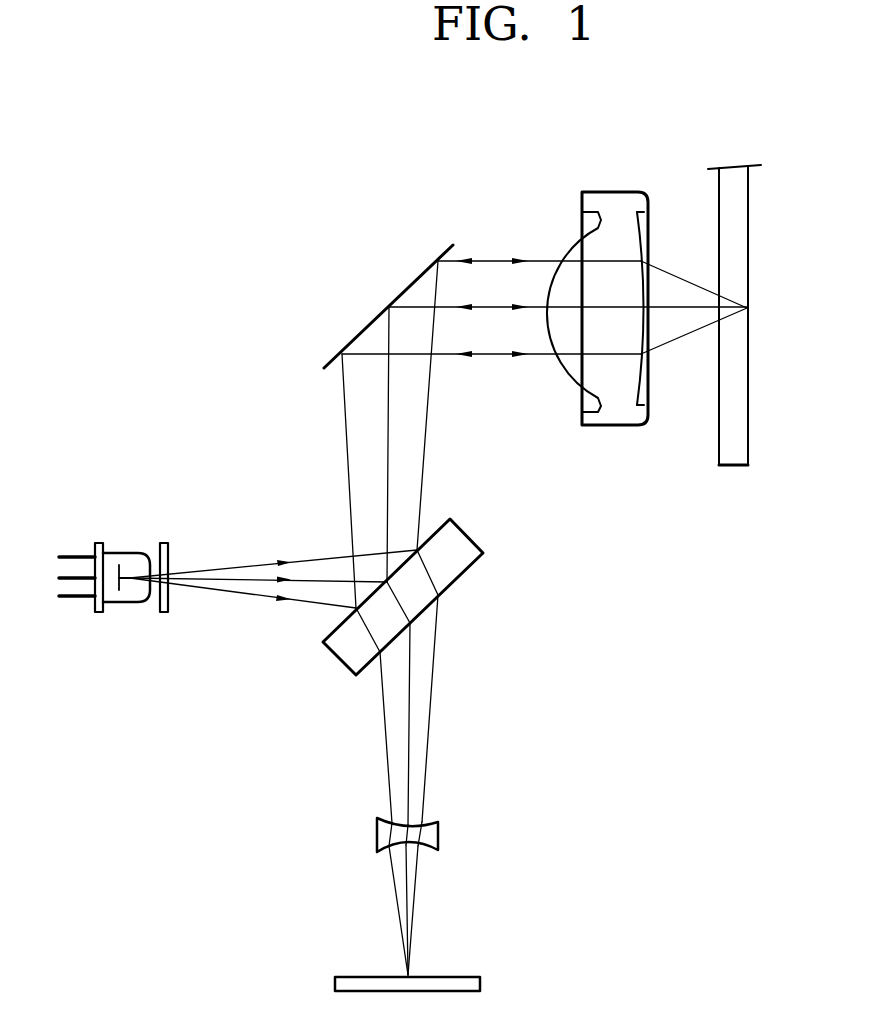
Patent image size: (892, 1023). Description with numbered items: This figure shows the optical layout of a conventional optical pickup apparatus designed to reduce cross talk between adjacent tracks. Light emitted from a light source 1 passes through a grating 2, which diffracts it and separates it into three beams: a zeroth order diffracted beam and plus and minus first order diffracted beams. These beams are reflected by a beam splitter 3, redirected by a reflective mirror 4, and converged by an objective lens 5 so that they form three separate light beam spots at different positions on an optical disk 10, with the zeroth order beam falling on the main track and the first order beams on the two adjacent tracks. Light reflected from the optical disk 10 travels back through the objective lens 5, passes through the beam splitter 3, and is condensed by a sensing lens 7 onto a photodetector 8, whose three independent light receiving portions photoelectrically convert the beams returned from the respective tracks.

The light source 1 is at (96, 612).
The grating 2 is at (165, 612).
The beam splitter 3 is at (476, 566).
The reflective mirror 4 is at (407, 287).
The objective lens 5 is at (622, 425).
The sensing lens 7 is at (440, 832).
The photodetector 8 is at (482, 985).
The optical disk 10 is at (735, 467).